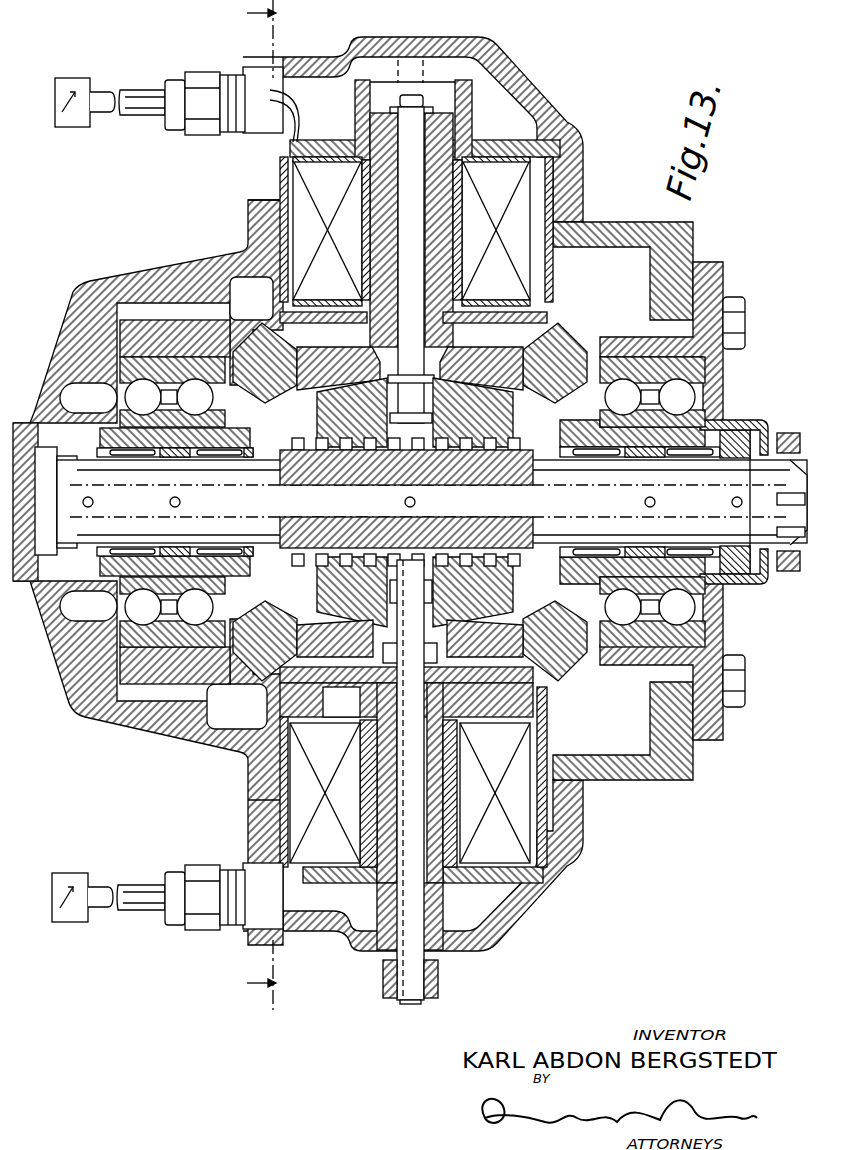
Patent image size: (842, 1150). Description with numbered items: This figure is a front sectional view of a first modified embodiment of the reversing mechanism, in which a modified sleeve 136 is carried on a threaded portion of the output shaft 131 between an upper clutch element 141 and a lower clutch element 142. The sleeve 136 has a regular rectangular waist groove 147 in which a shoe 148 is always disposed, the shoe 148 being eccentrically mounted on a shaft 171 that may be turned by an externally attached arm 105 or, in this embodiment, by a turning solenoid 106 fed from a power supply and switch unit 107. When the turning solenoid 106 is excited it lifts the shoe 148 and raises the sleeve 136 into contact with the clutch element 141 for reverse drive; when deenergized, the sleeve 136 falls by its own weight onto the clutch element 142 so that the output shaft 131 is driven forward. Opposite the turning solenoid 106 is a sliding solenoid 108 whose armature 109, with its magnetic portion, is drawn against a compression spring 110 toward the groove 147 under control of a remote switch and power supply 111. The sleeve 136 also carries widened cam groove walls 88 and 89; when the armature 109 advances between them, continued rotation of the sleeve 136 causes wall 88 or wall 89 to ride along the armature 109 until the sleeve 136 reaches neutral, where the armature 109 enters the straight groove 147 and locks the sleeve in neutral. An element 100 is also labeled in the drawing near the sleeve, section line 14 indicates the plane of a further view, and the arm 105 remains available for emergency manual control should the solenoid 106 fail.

The section line 14- 14 is at (270, 505).
The outer cam groove surface 88 is at (405, 265).
The outer cam groove surface 89 is at (411, 397).
The differential gear body 100 is at (415, 412).
The arm 105 is at (428, 979).
The turning solenoid 106 is at (411, 789).
The power supply and switch unit 107 is at (163, 874).
The sliding solenoid 108 is at (303, 116).
The armature 109 is at (393, 230).
The compression spring 110 is at (411, 231).
The remote switch and power supply 111 is at (164, 79).
The output shaft 131 is at (750, 528).
The sleeve 136 is at (608, 490).
The clutch element 141 is at (306, 363).
The clutch element 142 is at (513, 363).
The waist groove 147 is at (308, 630).
The shoe 148 is at (512, 631).
The shaft 171 is at (410, 799).